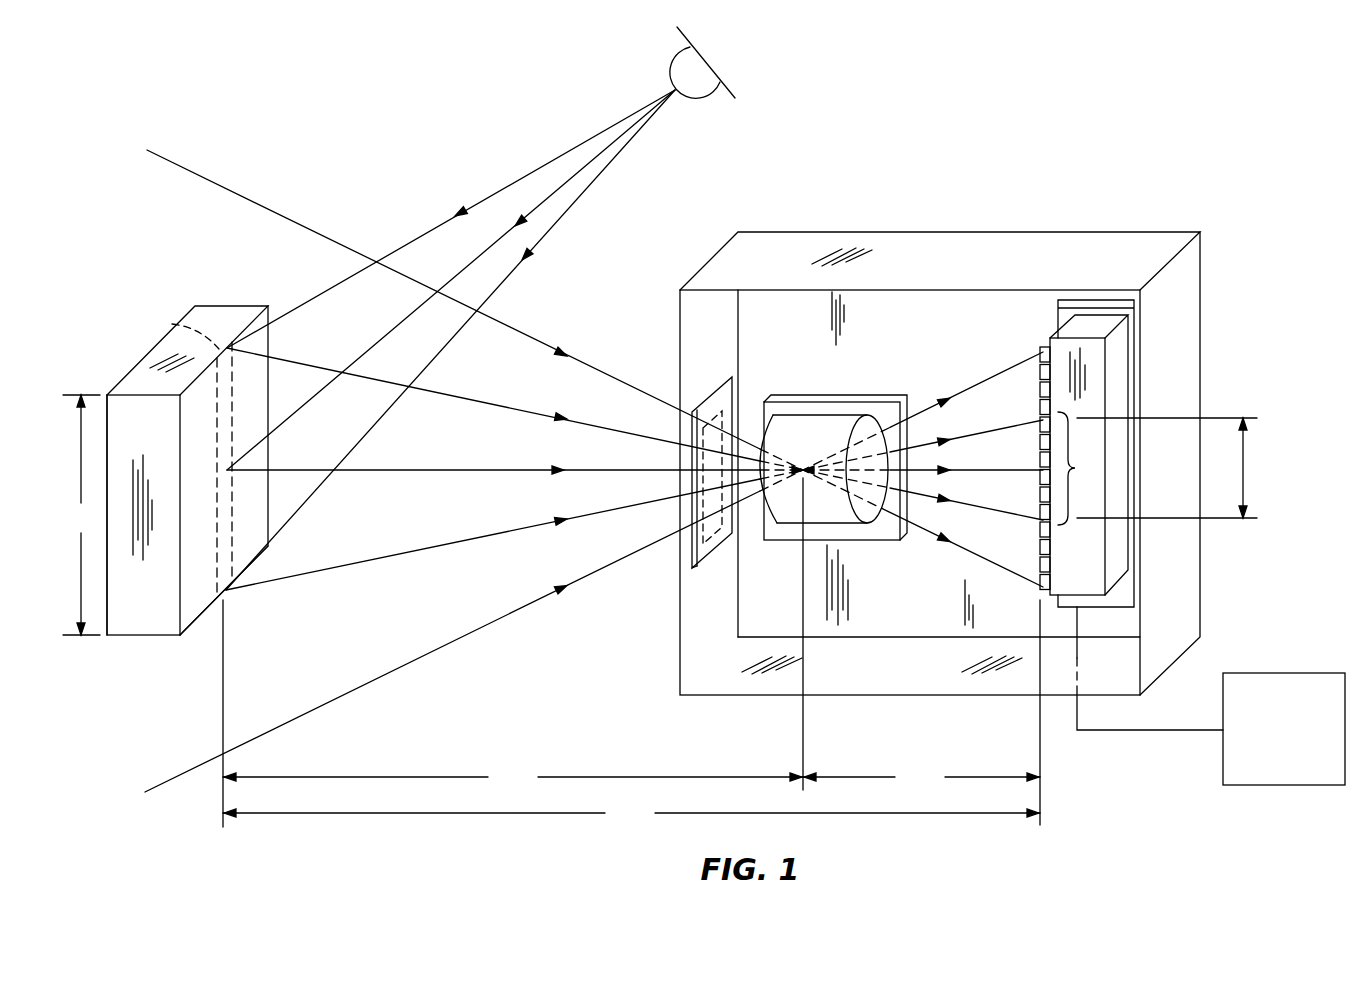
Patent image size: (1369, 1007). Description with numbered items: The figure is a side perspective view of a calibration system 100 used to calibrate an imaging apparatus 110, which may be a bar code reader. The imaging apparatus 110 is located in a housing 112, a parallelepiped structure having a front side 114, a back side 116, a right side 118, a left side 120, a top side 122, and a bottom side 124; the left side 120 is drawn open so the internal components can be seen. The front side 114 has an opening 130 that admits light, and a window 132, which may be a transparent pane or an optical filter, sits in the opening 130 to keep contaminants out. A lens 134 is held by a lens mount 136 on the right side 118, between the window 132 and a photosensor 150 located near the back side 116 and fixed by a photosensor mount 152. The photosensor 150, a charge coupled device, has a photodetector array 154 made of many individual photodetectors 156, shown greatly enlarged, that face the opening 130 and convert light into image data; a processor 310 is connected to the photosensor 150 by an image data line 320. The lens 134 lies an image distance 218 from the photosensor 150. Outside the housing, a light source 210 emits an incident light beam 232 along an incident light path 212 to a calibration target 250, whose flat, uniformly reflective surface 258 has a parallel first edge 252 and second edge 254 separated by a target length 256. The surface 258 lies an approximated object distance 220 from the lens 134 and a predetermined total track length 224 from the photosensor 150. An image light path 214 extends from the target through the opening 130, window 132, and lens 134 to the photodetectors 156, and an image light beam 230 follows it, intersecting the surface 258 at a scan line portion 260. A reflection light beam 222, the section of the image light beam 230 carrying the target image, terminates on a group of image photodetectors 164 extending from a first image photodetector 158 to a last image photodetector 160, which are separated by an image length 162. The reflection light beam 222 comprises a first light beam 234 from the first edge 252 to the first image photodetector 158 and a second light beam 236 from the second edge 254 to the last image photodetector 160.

The calibration system 100 is at (962, 130).
The imaging apparatus 110 is at (1115, 197).
The housing 112 is at (1178, 294).
The front side 114 is at (690, 617).
The back side 116 is at (1154, 594).
The right side 118 is at (904, 342).
The left side 120 is at (793, 315).
The top side 122 is at (900, 267).
The bottom side 124 is at (880, 674).
The opening 130 is at (719, 382).
The window 132 is at (698, 398).
The lens 134 is at (845, 415).
The lens mount 136 is at (792, 400).
The photosensor 150 is at (1118, 362).
The photosensor mount 152 is at (1103, 300).
The photodetector array 154 is at (1047, 335).
The photodetectors 156 is at (1019, 468).
The first image photodetector 158 is at (1040, 520).
The last image photodetector 160 is at (1040, 415).
The image length 162 is at (1247, 468).
The image photodetectors 164 is at (1075, 468).
The light source 210 is at (712, 97).
The incident light path 212 is at (603, 153).
The image light path 214 is at (447, 472).
The image distance 218 is at (921, 712).
The object distance 220 is at (513, 652).
The reflection light beam 222 is at (421, 556).
The total track length 224 is at (631, 813).
The image light beam 230 is at (402, 674).
The incident light beam 232 is at (549, 158).
The first light beam 234 is at (455, 397).
The second light beam 236 is at (331, 571).
The calibration target 250 is at (170, 285).
The first edge 252 is at (250, 328).
The second edge 254 is at (198, 620).
The target length 256 is at (79, 515).
The surface 258 is at (197, 562).
The scan line portion 260 is at (172, 324).
The processor 310 is at (1285, 673).
The image data line 320 is at (1143, 730).